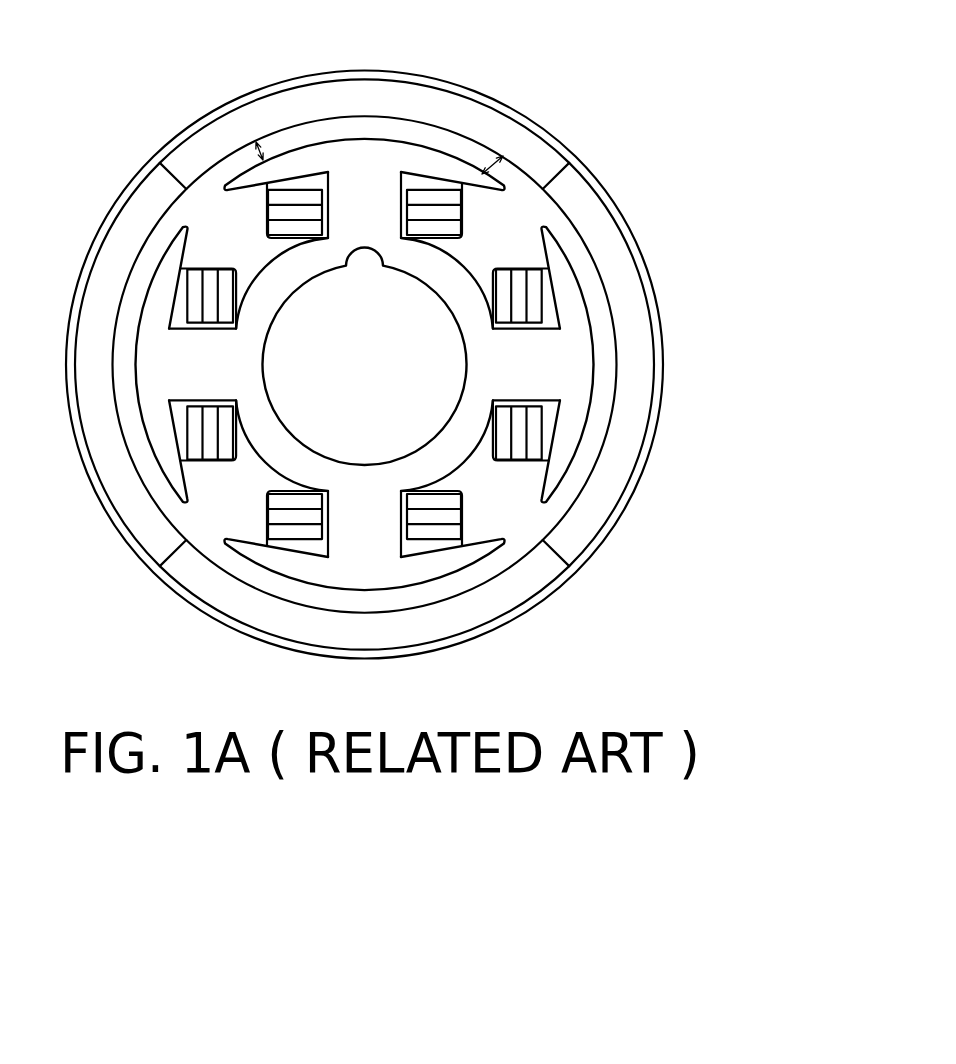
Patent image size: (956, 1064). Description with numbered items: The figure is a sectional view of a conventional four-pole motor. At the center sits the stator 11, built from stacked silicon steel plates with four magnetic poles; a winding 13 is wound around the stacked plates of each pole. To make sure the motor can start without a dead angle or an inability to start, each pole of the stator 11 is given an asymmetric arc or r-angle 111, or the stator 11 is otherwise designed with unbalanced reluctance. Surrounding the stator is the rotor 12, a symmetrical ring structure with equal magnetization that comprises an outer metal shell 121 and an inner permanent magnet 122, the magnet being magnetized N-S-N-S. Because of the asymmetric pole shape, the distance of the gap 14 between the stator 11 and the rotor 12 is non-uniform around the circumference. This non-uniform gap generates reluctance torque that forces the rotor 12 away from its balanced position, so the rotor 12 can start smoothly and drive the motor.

The stator 11 is at (460, 291).
The asymmetric arc or r-angle 111 is at (343, 170).
The rotor 12 is at (436, 364).
The metal shell 121 is at (665, 369).
The permanent magnet 122 is at (643, 413).
The winding 13 is at (440, 215).
The gap 14 is at (255, 145).